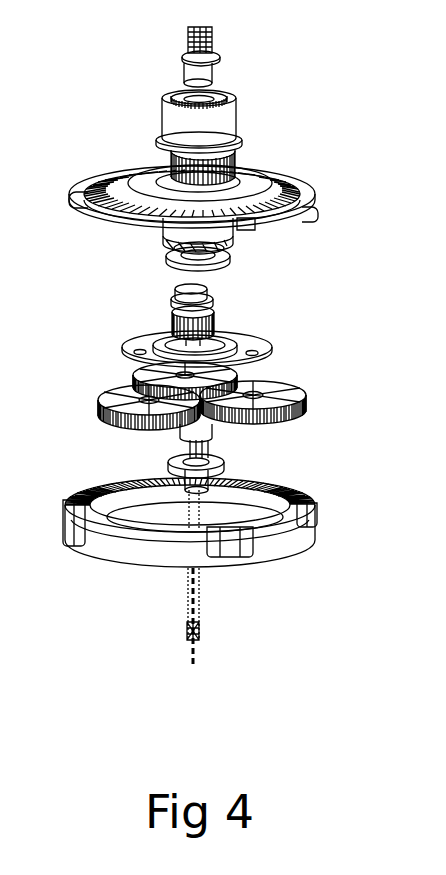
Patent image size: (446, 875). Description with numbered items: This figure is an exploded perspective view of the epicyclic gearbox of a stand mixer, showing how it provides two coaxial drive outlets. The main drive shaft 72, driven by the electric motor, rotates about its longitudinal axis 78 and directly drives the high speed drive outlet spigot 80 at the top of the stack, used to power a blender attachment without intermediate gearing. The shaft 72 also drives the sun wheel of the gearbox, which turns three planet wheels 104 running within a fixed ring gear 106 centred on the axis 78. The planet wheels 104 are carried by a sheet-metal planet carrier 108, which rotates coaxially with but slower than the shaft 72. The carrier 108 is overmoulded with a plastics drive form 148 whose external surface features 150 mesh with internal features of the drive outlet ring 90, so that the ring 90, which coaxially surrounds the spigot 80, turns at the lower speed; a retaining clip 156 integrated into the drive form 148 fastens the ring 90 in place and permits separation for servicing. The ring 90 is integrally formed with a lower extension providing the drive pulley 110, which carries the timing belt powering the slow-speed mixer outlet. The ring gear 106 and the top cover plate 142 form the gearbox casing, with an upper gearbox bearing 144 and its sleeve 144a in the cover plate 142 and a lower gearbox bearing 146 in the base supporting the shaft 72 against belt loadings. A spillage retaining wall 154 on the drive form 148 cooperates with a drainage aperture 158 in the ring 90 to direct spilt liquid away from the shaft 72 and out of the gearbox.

The high speed drive outlet spigot 80 is at (214, 42).
The drive outlet ring 90 is at (220, 122).
The drainage aperture 158 is at (204, 143).
The drive pulley 110 is at (233, 158).
The top cover plate 142 is at (302, 188).
The upper gearbox bearing 144 is at (195, 238).
The sleeve 144a is at (235, 255).
The plastics drive form 148 is at (165, 296).
The spillage retaining wall 154 is at (178, 287).
The retaining clip 156 is at (212, 297).
The external surface features 150 is at (172, 315).
The planet carrier 108 is at (262, 344).
The planet wheels 104 is at (285, 393).
The main drive shaft 72 is at (196, 451).
The lower gearbox bearing 146 is at (176, 473).
The ring gear 106 is at (108, 494).
The longitudinal axis 78 is at (203, 607).